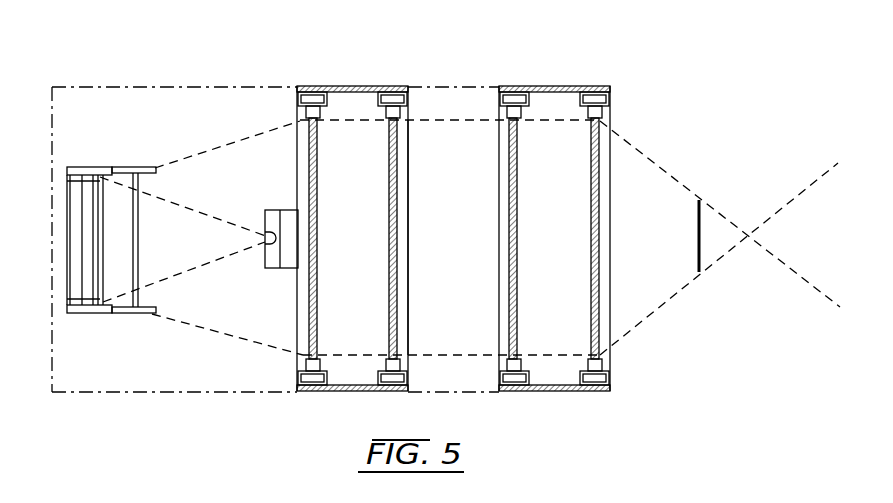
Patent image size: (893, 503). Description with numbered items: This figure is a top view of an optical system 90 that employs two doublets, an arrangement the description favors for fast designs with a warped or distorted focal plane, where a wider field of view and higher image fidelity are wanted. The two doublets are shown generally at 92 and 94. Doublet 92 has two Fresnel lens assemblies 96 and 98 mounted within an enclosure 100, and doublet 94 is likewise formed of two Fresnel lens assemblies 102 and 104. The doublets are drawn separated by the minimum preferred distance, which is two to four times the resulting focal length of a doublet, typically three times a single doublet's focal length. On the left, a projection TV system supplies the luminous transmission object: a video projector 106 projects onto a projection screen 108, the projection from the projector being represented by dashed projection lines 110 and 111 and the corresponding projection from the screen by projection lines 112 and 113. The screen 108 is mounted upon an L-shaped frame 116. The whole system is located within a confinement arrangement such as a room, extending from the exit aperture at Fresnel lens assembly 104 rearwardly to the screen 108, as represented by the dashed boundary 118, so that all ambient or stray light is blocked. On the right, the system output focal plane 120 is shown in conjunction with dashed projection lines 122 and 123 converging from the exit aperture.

The optical system 90 is at (686, 81).
The doublet 92 is at (362, 212).
The doublet 94 is at (553, 212).
The Fresnel lens assembly 96 is at (310, 298).
The Fresnel lens assembly 98 is at (399, 303).
The enclosure 100 is at (409, 247).
The Fresnel lens assembly 102 is at (508, 176).
The Fresnel lens assembly 104 is at (602, 222).
The video projector 106 is at (285, 210).
The projection screen 108 is at (95, 180).
The projection line 110 is at (170, 202).
The projection line 111 is at (165, 273).
The projection line 112 is at (167, 160).
The projection line 113 is at (167, 318).
The L-shaped frame 116 is at (75, 167).
The dashed boundary 118 is at (177, 87).
The system output focal plane 120 is at (701, 250).
The projection line 122 is at (650, 310).
The projection line 123 is at (655, 165).